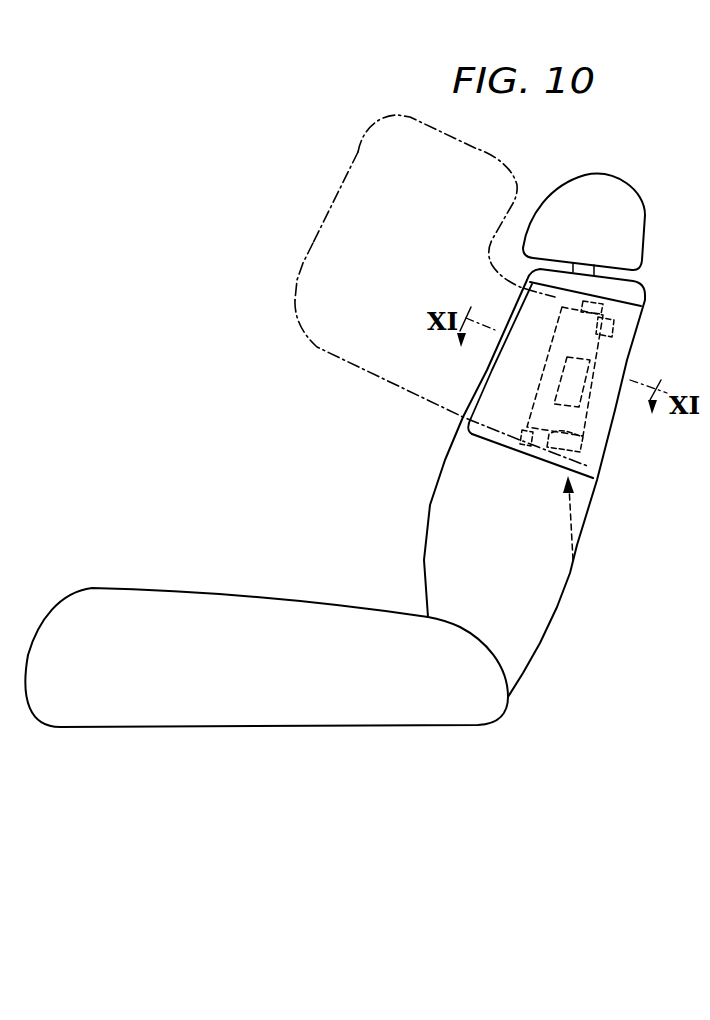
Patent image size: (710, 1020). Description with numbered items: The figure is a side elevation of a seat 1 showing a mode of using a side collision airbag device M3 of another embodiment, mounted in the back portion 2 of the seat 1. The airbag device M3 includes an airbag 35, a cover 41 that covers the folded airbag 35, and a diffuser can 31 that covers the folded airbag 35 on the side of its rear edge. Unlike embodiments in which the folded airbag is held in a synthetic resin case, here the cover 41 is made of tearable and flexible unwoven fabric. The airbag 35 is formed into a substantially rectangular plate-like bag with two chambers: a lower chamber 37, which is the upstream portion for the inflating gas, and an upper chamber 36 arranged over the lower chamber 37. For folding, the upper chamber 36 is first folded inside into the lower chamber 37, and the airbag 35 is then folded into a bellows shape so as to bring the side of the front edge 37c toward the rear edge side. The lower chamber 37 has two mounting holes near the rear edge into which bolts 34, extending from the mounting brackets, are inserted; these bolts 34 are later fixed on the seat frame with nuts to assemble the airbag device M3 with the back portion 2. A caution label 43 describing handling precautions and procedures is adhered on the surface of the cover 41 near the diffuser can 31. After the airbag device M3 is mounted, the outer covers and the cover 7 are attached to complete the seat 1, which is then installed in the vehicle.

The seat 1 is at (233, 718).
The back portion 2 is at (529, 628).
The cover 7 is at (466, 430).
The diffuser can 31 is at (595, 478).
The bolts 34 is at (598, 375).
The airbag 35 is at (369, 291).
The upper chamber 36 is at (358, 152).
The lower chamber 37 is at (203, 196).
The front edge 37c is at (300, 262).
The cover 41 is at (520, 455).
The caution label 43 is at (562, 380).
The side collision airbag device M3 is at (590, 528).